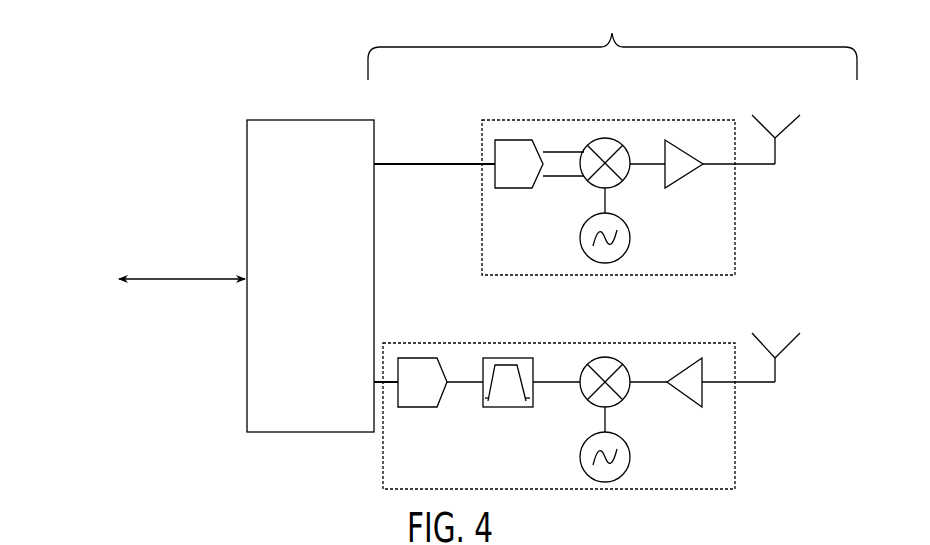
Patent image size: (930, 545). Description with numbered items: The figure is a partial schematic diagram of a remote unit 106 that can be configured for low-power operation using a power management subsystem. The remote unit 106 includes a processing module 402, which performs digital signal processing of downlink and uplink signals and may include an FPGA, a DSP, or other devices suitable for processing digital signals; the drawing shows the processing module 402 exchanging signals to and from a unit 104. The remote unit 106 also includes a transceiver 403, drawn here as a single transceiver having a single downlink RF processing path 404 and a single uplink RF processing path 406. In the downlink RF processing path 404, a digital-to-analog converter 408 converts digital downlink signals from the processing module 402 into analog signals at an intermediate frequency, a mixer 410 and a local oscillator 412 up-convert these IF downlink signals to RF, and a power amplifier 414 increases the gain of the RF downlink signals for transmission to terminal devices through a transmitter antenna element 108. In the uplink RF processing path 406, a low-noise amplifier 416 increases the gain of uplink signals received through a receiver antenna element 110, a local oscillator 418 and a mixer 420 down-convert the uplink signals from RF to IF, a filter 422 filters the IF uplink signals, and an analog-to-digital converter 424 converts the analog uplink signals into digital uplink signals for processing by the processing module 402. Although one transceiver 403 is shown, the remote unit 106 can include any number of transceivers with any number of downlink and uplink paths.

The unit 104 is at (138, 276).
The remote unit 106 is at (240, 88).
The transmitter antenna elements 108 is at (776, 108).
The receiver antenna elements 110 is at (768, 326).
The processing module 402 is at (310, 276).
The transceiver 403 is at (612, 45).
The downlink RF processing path 404 is at (493, 116).
The uplink RF processing path 406 is at (467, 340).
The digital-to-analog converter 408 is at (530, 191).
The mixer 410 is at (584, 179).
The local oscillator 412 is at (633, 226).
The power amplifier 414 is at (683, 183).
The low-noise amplifier 416 is at (673, 398).
The local oscillator 418 is at (634, 443).
The mixer 420 is at (583, 398).
The filter 422 is at (508, 411).
The analog-to-digital converter 424 is at (444, 411).